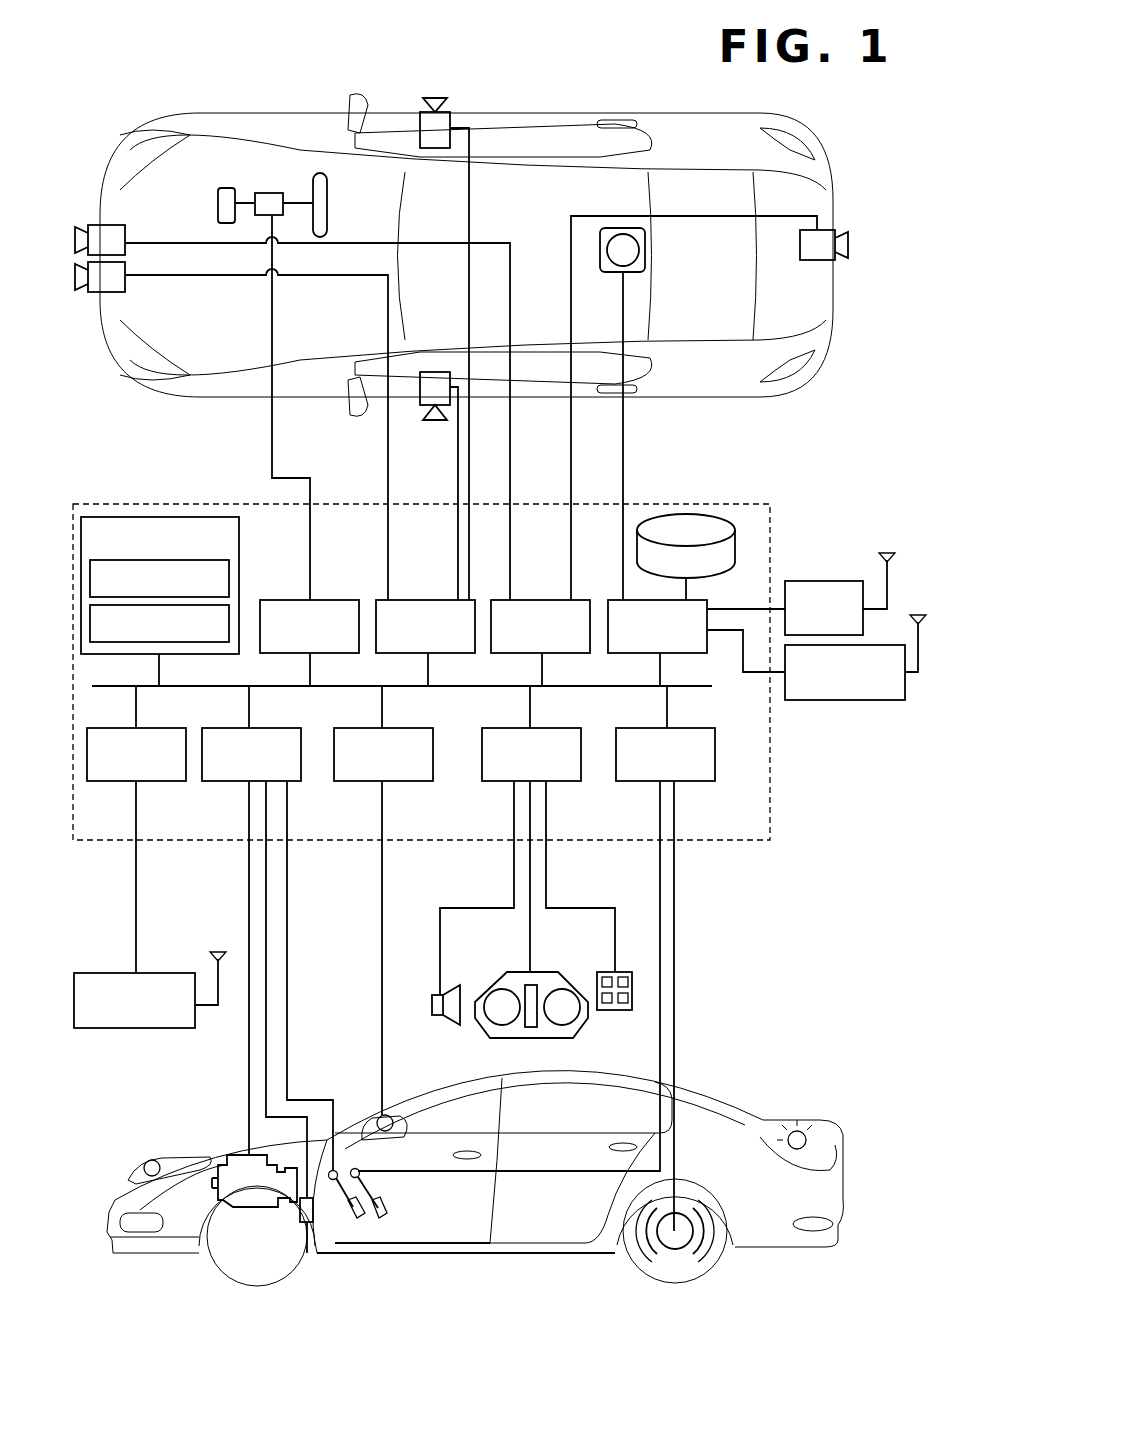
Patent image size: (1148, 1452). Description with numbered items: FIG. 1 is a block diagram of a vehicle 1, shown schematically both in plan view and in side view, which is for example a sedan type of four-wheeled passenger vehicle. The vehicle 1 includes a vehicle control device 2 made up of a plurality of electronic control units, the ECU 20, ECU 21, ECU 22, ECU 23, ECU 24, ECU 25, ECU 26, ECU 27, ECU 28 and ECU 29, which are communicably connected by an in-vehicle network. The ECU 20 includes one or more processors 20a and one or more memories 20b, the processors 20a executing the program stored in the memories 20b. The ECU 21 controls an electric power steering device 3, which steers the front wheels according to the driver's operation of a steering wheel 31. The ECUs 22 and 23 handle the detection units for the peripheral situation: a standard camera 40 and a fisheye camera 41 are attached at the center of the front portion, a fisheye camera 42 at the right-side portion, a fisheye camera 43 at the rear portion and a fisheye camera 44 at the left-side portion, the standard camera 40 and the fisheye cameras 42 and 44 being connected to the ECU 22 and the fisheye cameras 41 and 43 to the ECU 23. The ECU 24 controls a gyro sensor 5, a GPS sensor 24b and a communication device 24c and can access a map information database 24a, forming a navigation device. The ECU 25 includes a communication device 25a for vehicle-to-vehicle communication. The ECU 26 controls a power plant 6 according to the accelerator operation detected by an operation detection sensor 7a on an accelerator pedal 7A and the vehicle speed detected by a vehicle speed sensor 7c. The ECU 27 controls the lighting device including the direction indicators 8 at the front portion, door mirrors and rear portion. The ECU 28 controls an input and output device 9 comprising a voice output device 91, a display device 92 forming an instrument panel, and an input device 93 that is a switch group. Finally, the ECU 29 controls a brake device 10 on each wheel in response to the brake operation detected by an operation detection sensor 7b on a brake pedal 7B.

The vehicle 1 is at (852, 178).
The vehicle control device 2 is at (740, 842).
The electric power steering device 3 is at (232, 188).
The steering wheel 31 is at (327, 202).
The gyro sensor 5 is at (645, 248).
The power plant 6 is at (220, 1155).
The accelerator pedal 7A is at (362, 1214).
The brake pedal 7B is at (386, 1204).
The operation detection sensor 7a is at (334, 1168).
The operation detection sensor 7b is at (360, 1172).
The vehicle speed sensor 7c is at (306, 1222).
The direction indicator 8 is at (146, 1166).
The input and output device 9 is at (460, 1042).
The brake device 10 is at (678, 1250).
The ECU 20 is at (192, 557).
The processor 20a is at (229, 578).
The memory 20b is at (229, 622).
The ECU 21 is at (340, 600).
The ECU 22 is at (425, 600).
The ECU 23 is at (542, 600).
The ECU 24 is at (614, 600).
The map information database 24a is at (682, 515).
The GPS sensor 24b is at (840, 581).
The communication device 24c is at (825, 700).
The ECU 25 is at (160, 781).
The communication device 25a is at (134, 1028).
The ECU 26 is at (222, 781).
The ECU 27 is at (408, 781).
The ECU 28 is at (566, 780).
The ECU 29 is at (695, 780).
The standard camera 40 is at (125, 284).
The fisheye camera 41 is at (125, 238).
The fisheye camera 42 is at (445, 98).
The fisheye camera 43 is at (852, 240).
The fisheye camera 44 is at (435, 420).
The voice output device 91 is at (432, 998).
The display device 92 is at (488, 990).
The input device 93 is at (612, 1010).